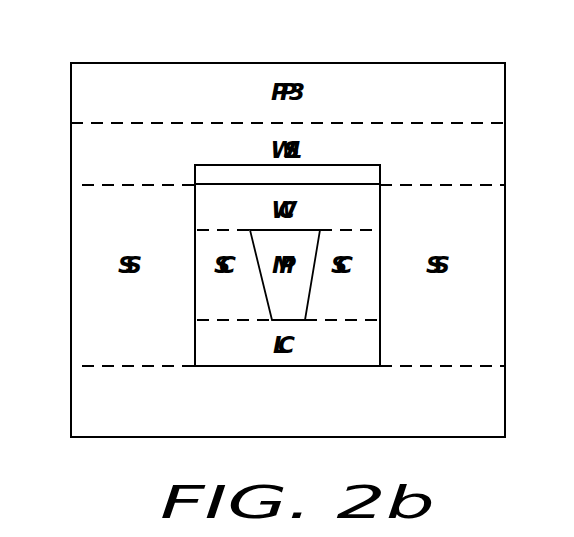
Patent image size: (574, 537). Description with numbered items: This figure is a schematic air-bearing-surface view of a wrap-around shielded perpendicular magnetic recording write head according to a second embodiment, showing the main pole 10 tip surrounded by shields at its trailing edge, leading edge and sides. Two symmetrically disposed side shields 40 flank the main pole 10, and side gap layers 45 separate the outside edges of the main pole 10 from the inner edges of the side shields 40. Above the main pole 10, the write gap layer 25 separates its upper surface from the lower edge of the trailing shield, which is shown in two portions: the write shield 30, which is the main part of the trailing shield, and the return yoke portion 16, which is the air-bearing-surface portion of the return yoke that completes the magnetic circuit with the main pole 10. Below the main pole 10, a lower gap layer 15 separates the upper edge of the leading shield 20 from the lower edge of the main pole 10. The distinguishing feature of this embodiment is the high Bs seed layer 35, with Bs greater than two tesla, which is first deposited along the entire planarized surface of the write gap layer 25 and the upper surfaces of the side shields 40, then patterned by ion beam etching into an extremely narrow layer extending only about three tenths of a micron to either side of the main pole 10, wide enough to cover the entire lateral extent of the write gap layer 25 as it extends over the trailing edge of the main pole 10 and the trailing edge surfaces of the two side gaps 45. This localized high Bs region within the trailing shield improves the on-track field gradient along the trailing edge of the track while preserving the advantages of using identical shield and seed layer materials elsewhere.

The main pole 10 is at (307, 238).
The lower gap layer 15 is at (365, 349).
The PP3 portion of trailing shield 16 is at (480, 95).
The leading shield 20 is at (480, 403).
The write gap layer 25 is at (210, 206).
The write shield WS1 30 is at (480, 150).
The high Bs seed layer 35 is at (352, 175).
The side shields 40 is at (97, 296).
The side gap layers 45 is at (220, 308).